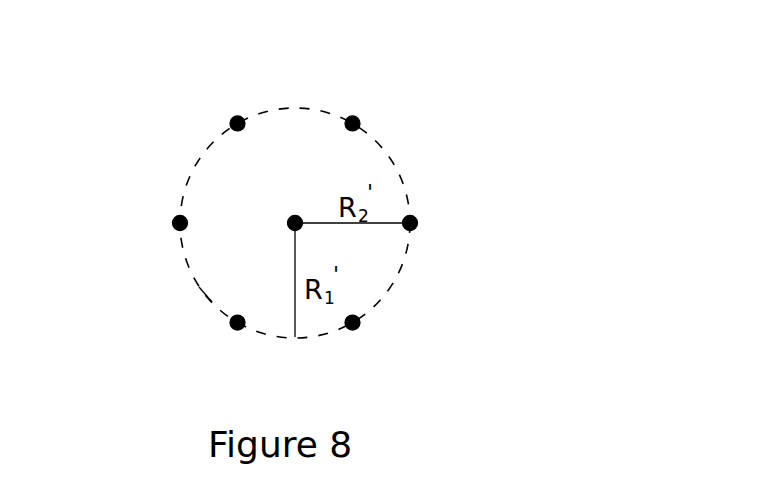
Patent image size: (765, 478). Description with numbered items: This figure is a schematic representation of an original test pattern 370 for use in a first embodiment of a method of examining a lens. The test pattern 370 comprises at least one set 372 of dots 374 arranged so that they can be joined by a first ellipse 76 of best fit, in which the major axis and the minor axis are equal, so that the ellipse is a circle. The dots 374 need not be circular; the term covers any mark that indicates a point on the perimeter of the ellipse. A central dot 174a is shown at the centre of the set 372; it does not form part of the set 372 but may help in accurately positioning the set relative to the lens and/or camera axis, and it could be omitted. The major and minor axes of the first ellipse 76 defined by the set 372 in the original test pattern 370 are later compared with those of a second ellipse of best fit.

The set of dots 372 is at (153, 229).
The center point of the pattern 174a is at (290, 219).
The test pattern 370 is at (466, 213).
The dots 374 is at (238, 116).
The first ellipse 76 is at (203, 296).